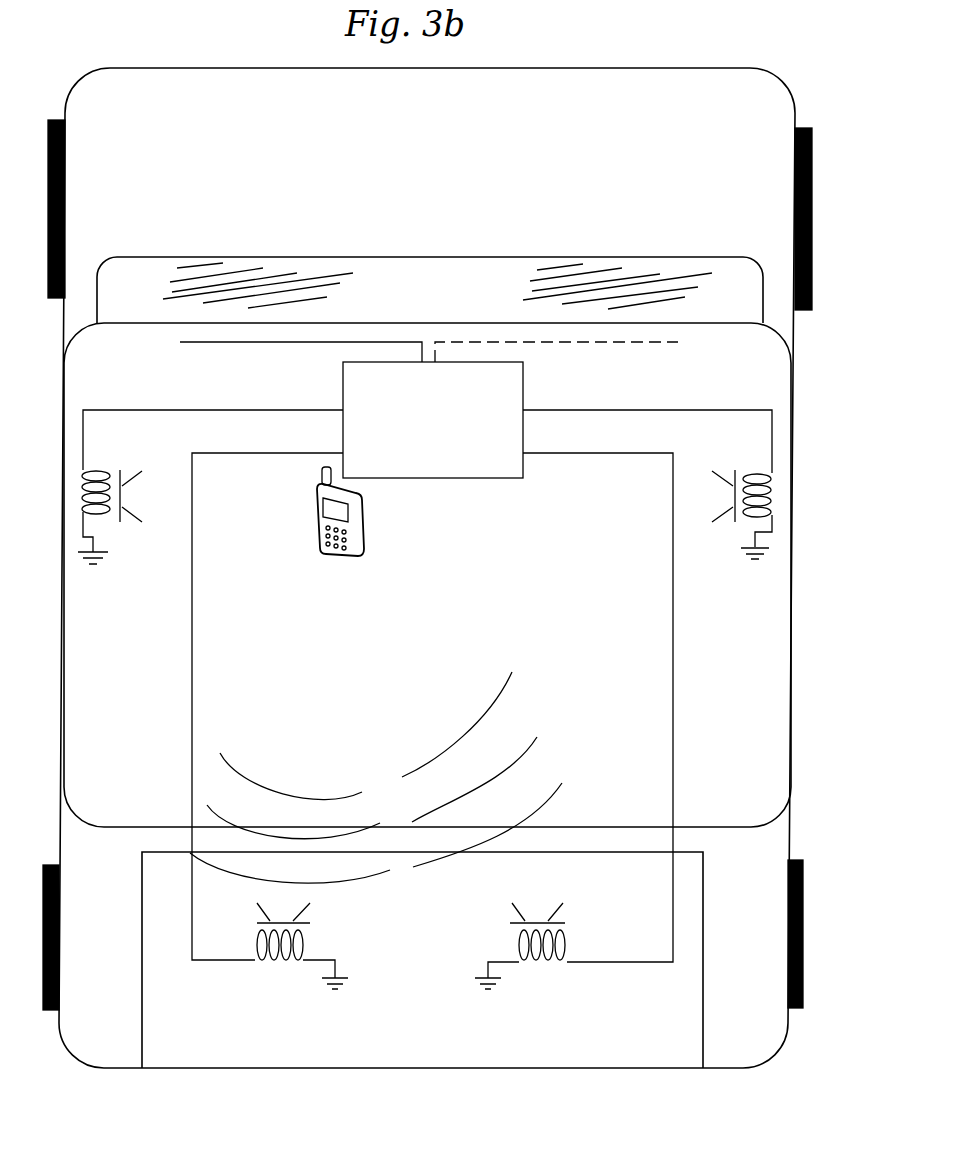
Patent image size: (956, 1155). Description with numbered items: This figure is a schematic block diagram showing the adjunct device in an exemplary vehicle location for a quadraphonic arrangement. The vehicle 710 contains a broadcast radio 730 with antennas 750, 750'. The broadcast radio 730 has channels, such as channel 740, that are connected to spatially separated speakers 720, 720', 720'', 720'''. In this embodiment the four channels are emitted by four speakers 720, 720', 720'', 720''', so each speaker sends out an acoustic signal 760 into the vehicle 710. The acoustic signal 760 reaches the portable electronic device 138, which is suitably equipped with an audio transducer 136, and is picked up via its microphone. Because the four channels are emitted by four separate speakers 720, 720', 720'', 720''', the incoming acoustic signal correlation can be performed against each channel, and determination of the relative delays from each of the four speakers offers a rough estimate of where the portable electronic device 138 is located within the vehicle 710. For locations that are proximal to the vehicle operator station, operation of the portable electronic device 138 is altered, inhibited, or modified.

The vehicle 710 is at (553, 113).
The speaker 720 is at (127, 514).
The speaker 720' is at (770, 494).
The speaker 720'' is at (259, 963).
The speaker 720''' is at (569, 963).
The broadcast radio 730 is at (512, 392).
The channel 740 is at (481, 476).
The antenna 750 is at (301, 369).
The antenna 750' is at (556, 369).
The acoustic signal 760 is at (222, 778).
The audio transducer 136 is at (325, 552).
The portable electronic device 138 is at (353, 550).